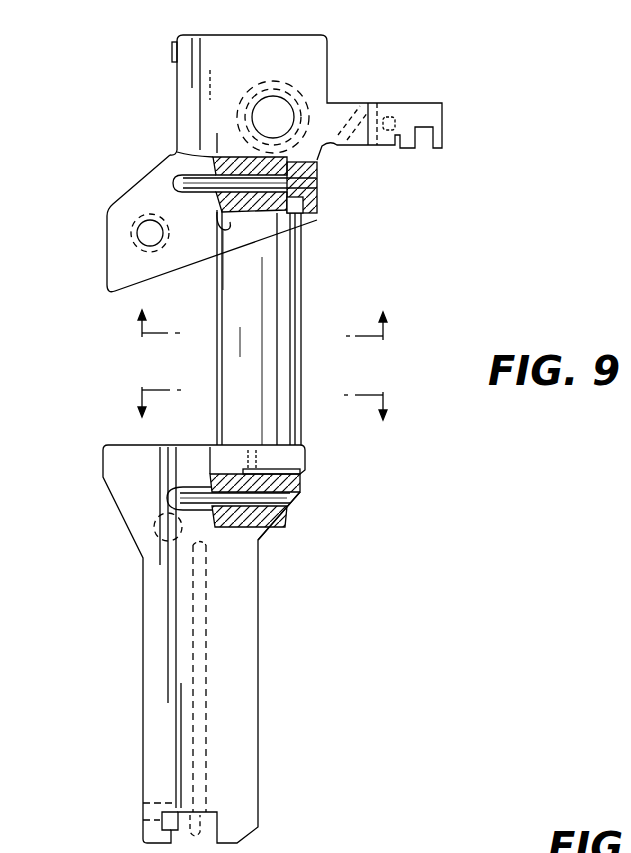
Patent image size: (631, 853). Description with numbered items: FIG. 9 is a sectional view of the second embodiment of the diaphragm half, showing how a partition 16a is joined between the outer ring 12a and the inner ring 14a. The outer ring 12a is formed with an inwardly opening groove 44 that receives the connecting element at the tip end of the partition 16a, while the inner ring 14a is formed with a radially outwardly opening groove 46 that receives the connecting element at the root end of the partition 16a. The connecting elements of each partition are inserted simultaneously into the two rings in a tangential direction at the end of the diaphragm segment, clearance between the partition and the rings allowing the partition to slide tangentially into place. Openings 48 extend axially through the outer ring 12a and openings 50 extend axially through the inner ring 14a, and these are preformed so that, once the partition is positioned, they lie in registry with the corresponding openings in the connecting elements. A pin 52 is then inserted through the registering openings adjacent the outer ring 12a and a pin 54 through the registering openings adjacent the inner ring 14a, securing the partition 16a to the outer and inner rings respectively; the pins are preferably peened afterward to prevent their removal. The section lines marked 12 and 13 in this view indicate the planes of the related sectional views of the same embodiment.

The outer ring 12a is at (187, 110).
The inwardly opening groove 44 is at (127, 193).
The pin 52 is at (170, 153).
The opening 48 is at (317, 180).
The partition 16a is at (305, 258).
The section line 12- 12 is at (267, 326).
The section line 13- 13 is at (265, 403).
The inner ring 14a is at (150, 607).
The pin 54 is at (210, 476).
The opening 50 is at (297, 497).
The radially outwardly opening groove 46 is at (262, 537).